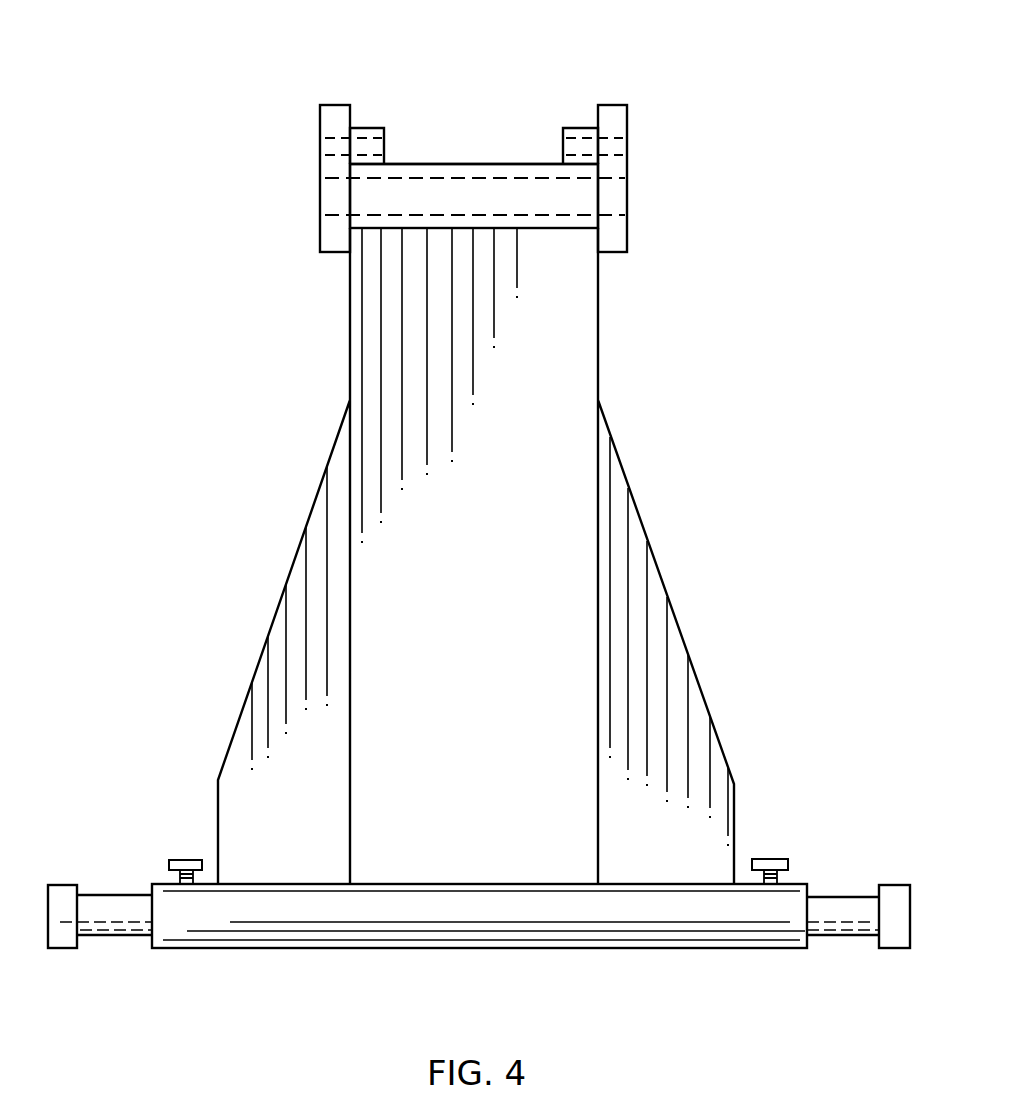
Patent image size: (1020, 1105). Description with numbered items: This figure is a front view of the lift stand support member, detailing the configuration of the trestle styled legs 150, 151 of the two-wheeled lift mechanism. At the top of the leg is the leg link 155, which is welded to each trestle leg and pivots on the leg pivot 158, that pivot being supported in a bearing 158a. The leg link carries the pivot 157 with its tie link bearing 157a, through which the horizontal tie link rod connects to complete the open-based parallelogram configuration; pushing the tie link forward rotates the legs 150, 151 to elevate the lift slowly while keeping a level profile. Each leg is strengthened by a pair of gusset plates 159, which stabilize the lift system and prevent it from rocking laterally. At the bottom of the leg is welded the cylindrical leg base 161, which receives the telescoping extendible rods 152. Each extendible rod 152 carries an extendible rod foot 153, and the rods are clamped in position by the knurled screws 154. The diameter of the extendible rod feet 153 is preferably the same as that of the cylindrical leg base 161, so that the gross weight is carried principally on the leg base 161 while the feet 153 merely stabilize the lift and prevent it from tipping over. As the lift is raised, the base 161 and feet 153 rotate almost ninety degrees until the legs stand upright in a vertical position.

The trestle type steel leg 150 is at (519, 697).
The trestle type steel leg 151 is at (439, 386).
The telescoping extendible rod 152 is at (118, 936).
The extendible rod foot 153 is at (60, 890).
The knurled screw 154 is at (182, 858).
The leg link 155 is at (318, 110).
The pivot 157 is at (333, 147).
The tie link bearing 157a is at (382, 125).
The leg pivot 158 is at (577, 197).
The bearing 158a is at (465, 164).
The gusset plate 159 is at (296, 546).
The cylindrical leg base 161 is at (515, 949).